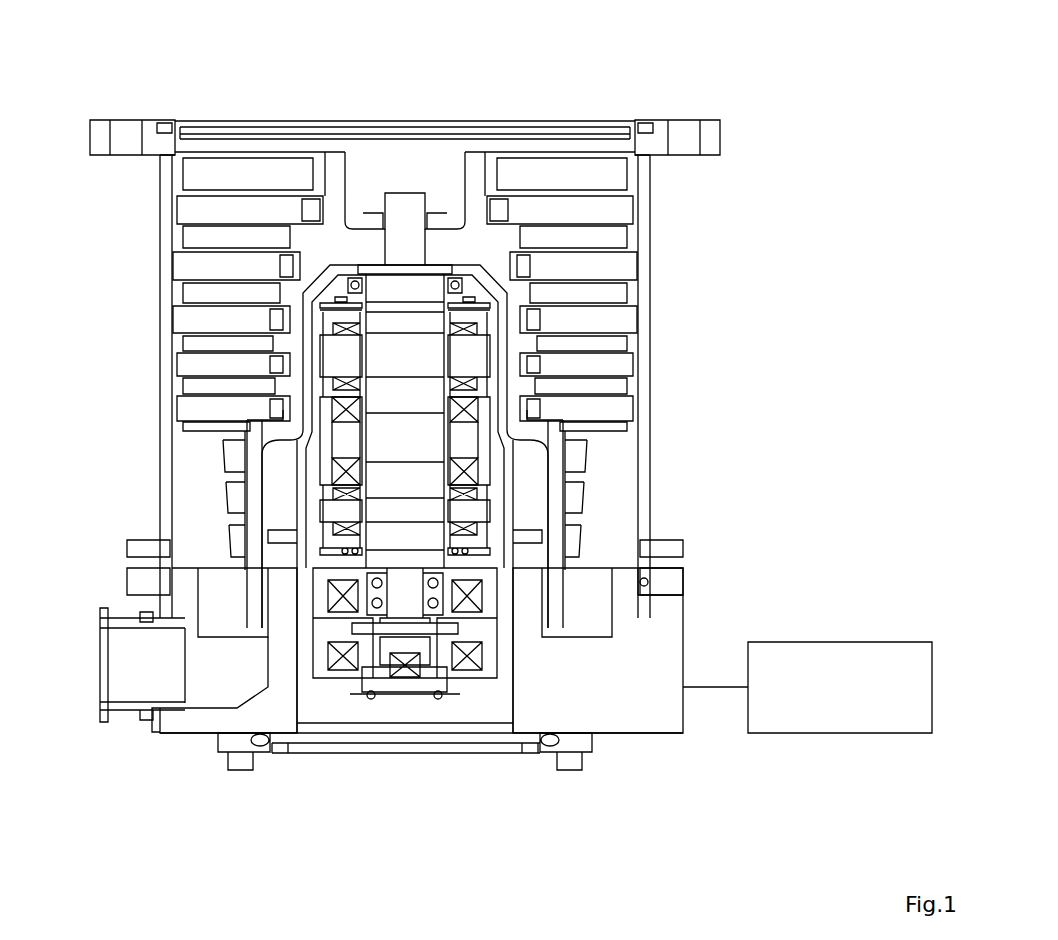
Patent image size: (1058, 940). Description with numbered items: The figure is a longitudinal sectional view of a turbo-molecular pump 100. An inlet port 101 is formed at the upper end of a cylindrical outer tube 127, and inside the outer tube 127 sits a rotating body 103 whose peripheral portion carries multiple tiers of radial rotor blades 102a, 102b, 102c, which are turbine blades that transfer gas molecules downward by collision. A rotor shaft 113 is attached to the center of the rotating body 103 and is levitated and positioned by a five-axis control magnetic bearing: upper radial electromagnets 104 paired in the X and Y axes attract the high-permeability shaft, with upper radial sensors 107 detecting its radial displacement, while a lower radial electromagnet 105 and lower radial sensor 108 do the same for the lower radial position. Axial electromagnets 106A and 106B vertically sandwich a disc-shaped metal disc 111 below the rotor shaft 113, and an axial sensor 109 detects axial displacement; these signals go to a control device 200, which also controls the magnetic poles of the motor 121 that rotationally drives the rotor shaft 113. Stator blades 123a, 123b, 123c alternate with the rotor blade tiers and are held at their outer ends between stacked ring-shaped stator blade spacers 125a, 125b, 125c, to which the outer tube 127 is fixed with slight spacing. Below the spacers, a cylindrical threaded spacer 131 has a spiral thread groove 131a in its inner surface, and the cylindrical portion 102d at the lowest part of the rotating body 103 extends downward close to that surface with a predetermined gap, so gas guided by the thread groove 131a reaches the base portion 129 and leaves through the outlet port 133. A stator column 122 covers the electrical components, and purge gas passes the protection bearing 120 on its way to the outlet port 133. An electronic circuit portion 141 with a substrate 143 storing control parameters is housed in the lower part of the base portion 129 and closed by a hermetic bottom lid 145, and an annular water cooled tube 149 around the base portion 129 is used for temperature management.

The turbo-molecular pump 100 is at (428, 51).
The inlet port 101 is at (440, 120).
The rotating body 103 is at (350, 199).
The outer tube 127 is at (643, 240).
The stator blade spacer 125a is at (185, 166).
The rotor blade 102a is at (193, 177).
The stator blade 123a is at (193, 237).
The stator blade spacer 125b is at (193, 263).
The rotor blade 102b is at (193, 290).
The stator blade 123b is at (193, 317).
The stator blade spacer 125c is at (190, 343).
The rotor blade 102c is at (190, 365).
The stator blade 123c is at (190, 386).
The thread groove 131a is at (235, 457).
The cylindrical portion 102d is at (255, 490).
The threaded spacer 131 is at (190, 522).
The outlet port 133 is at (127, 693).
The rotor shaft 113 is at (433, 318).
The upper radial sensor 107 is at (480, 300).
The upper radial electromagnet 104 is at (490, 353).
The motor 121 is at (480, 435).
The stator column 122 is at (502, 465).
The lower radial electromagnet 105 is at (480, 508).
The lower radial sensor 108 is at (487, 552).
The protection bearing 120 is at (363, 574).
The metal disc 111 is at (355, 628).
The axial electromagnet 106A is at (480, 598).
The axial electromagnet 106B is at (480, 655).
The axial sensor 109 is at (400, 692).
The substrate 143 is at (450, 692).
The electronic circuit portion 141 is at (362, 704).
The hermetic bottom lid 145 is at (310, 753).
The water cooled tube 149 is at (550, 752).
The base portion 129 is at (620, 726).
The control device 200 is at (887, 642).